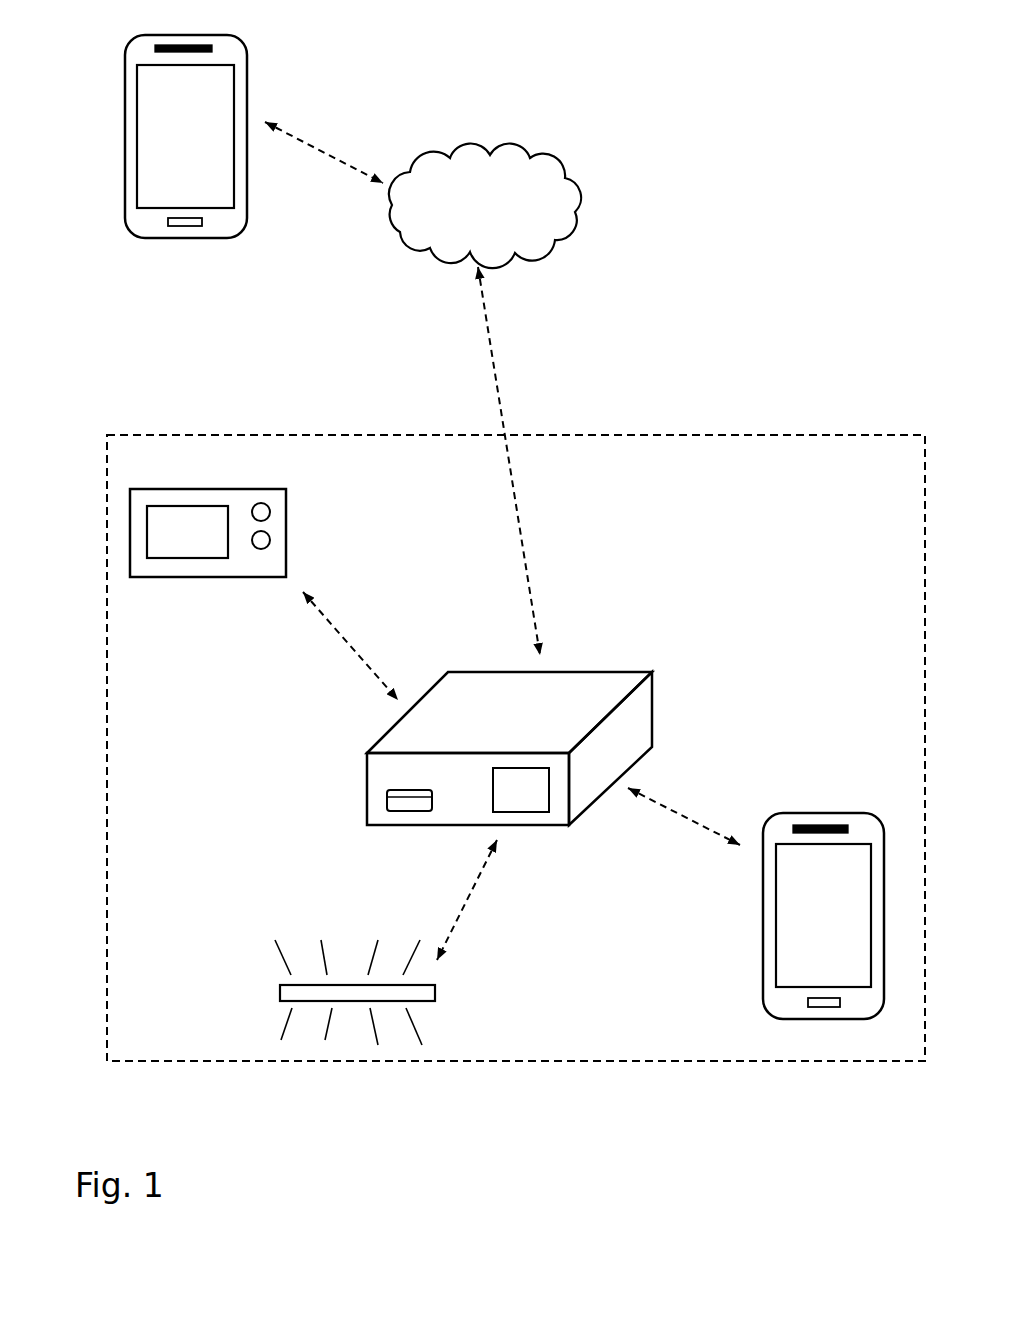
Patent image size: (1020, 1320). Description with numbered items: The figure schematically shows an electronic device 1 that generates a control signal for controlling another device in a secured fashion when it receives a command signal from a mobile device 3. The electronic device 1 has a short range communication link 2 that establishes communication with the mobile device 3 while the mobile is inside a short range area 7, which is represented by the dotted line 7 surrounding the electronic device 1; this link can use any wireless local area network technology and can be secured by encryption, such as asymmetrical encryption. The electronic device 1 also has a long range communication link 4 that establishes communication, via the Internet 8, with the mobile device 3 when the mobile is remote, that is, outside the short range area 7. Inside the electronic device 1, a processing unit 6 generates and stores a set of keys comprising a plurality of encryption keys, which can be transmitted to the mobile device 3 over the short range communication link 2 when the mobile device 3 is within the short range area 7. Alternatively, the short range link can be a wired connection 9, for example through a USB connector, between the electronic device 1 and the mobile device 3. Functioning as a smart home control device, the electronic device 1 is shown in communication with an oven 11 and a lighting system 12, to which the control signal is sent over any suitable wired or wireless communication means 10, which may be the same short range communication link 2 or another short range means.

The electronic device 1 is at (637, 700).
The short range communication link 2 is at (684, 812).
The mobile device 3 is at (147, 222).
The long range communication link 4 is at (402, 385).
The processing unit 6 is at (521, 790).
The short range area 7 is at (105, 868).
The Internet 8 is at (485, 206).
The wired connection 9 is at (400, 812).
The communication means 10 is at (413, 776).
The oven 11 is at (281, 505).
The lighting system 12 is at (280, 993).